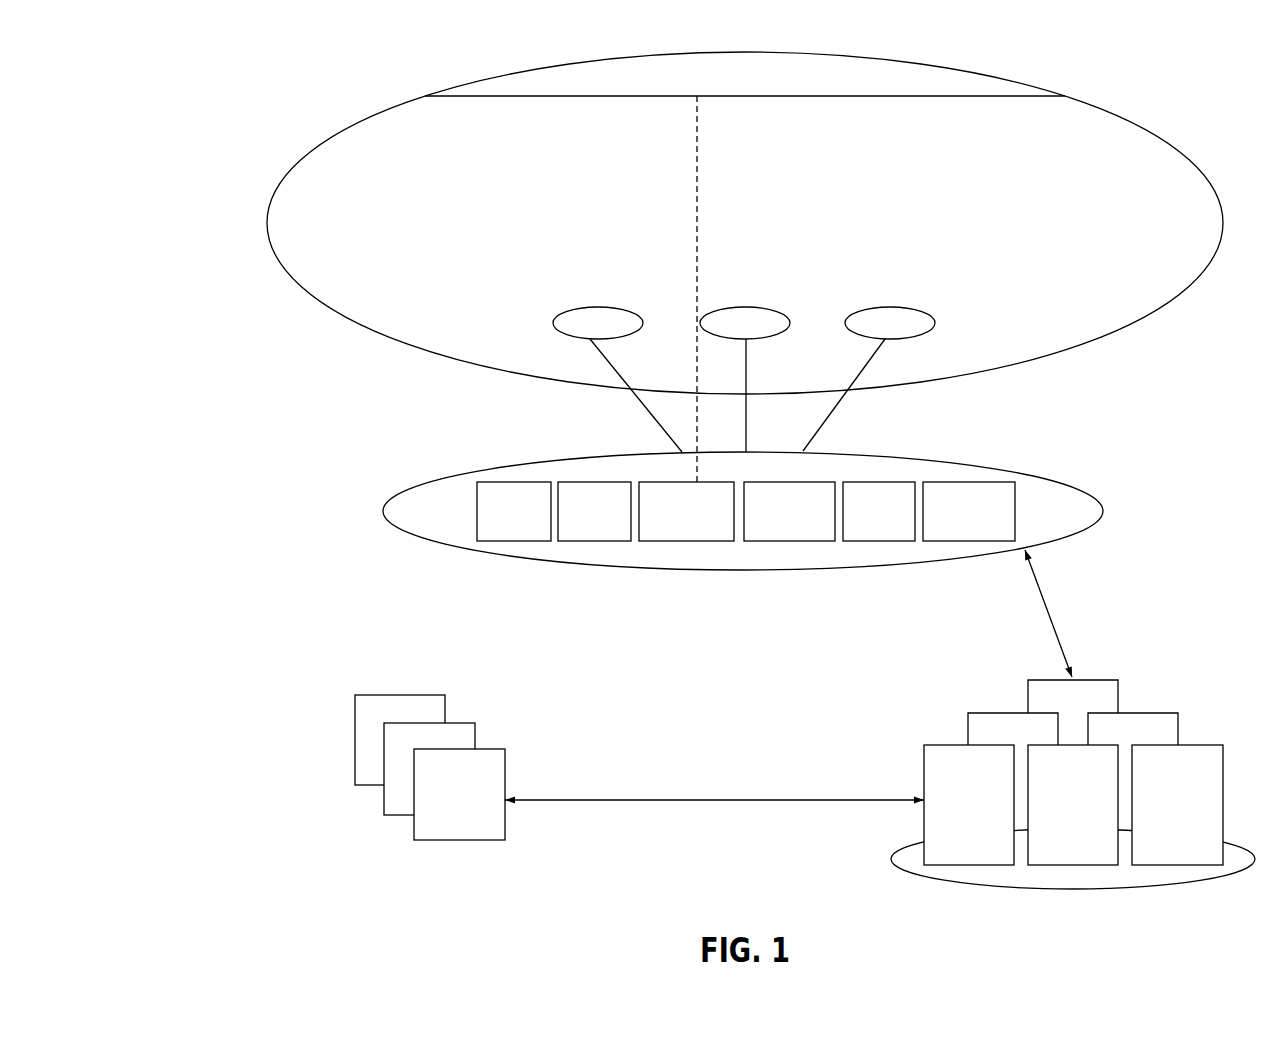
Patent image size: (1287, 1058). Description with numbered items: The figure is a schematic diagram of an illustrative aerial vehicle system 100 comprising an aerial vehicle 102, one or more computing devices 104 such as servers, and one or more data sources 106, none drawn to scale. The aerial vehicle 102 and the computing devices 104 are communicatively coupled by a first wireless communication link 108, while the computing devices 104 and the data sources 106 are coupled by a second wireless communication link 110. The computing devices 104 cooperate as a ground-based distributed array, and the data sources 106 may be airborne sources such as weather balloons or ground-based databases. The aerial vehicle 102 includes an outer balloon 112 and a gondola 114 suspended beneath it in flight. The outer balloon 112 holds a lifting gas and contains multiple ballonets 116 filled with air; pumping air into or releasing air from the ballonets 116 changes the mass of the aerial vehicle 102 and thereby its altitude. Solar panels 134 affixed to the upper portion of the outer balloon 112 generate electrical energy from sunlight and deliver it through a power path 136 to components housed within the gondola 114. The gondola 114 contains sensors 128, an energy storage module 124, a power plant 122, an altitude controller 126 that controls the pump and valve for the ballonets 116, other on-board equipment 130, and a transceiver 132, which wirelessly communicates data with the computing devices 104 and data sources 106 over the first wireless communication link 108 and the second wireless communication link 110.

The aerial vehicle system 100 is at (179, 57).
The aerial vehicle 102 is at (1181, 381).
The computing devices 104 is at (958, 830).
The data sources 106 is at (448, 820).
The first wireless communication link 108 is at (1043, 600).
The second wireless communication link 110 is at (705, 800).
The outer balloon 112 is at (1080, 348).
The gondola 114 is at (462, 472).
The ballonets 116 is at (744, 379).
The power plant 122 is at (698, 536).
The energy storage module 124 is at (606, 536).
The altitude controller 126 is at (778, 536).
The sensors 128 is at (503, 528).
The on-board equipment 130 is at (868, 536).
The transceiver 132 is at (958, 528).
The solar panels 134 is at (731, 83).
The power path 136 is at (697, 212).